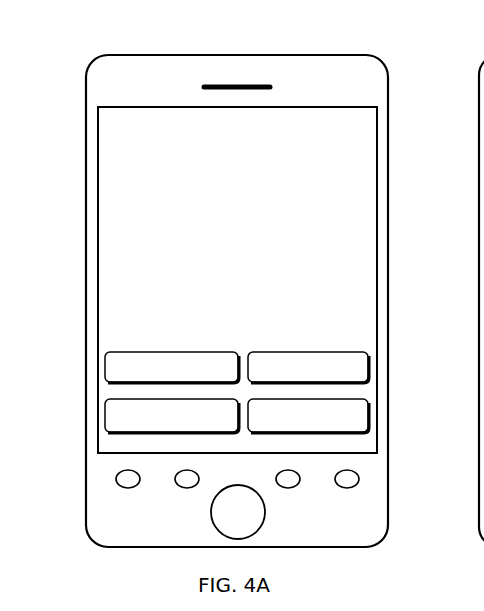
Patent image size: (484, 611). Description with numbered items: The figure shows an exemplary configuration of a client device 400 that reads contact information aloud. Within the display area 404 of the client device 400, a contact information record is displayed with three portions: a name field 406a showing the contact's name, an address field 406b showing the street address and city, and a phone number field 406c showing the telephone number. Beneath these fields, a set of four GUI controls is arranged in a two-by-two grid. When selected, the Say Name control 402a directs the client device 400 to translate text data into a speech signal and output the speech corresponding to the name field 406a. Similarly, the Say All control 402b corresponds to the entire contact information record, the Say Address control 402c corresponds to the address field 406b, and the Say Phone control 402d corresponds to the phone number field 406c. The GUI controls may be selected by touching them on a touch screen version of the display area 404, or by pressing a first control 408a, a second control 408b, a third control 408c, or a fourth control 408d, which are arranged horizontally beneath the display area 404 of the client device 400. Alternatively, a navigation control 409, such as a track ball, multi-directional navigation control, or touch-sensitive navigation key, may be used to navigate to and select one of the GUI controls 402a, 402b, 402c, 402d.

The client device 400 is at (310, 55).
The display area 404 is at (322, 107).
The name field 406a is at (281, 131).
The address field 406b is at (303, 167).
The phone number field 406c is at (249, 259).
The Say Name control 402a is at (180, 352).
The Say All control 402b is at (305, 352).
The Say Address control 402c is at (105, 415).
The Say Phone control 402d is at (368, 415).
The first control 408a is at (134, 487).
The second control 408b is at (193, 487).
The third control 408c is at (282, 487).
The fourth control 408d is at (341, 487).
The navigation control 409 is at (238, 512).